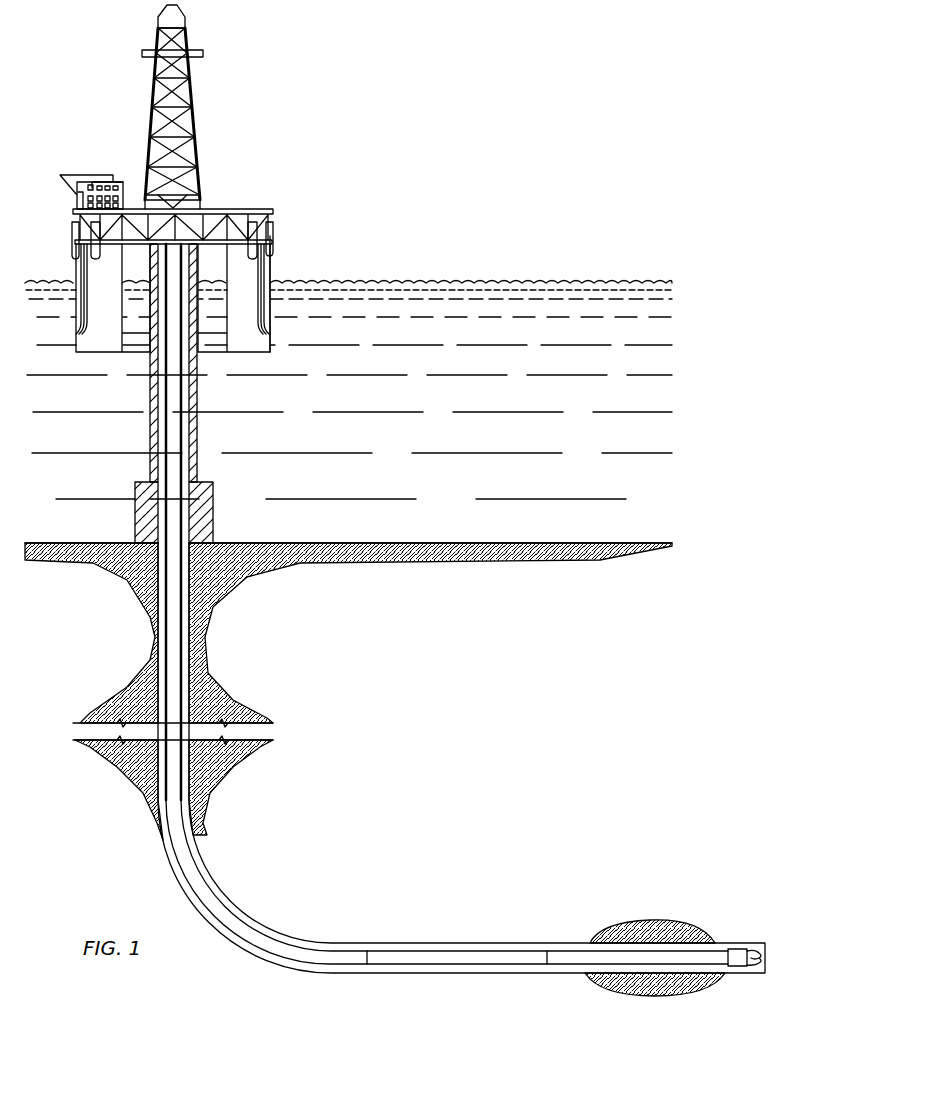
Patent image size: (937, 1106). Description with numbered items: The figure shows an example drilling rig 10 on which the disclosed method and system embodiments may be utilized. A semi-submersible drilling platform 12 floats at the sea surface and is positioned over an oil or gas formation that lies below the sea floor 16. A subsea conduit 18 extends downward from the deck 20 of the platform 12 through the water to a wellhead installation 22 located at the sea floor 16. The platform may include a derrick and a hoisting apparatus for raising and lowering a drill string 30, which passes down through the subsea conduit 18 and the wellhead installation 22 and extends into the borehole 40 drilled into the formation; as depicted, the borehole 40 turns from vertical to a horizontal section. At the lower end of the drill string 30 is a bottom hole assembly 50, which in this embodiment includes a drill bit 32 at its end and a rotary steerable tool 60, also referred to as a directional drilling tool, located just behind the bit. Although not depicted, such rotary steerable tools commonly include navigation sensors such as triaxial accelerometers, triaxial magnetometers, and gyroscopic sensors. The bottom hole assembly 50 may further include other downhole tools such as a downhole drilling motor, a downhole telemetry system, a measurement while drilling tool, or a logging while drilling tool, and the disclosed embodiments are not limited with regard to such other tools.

The drilling rig 10 is at (268, 106).
The semi-submersible drilling platform 12 is at (256, 209).
The deck 20 is at (276, 240).
The drill string 30 is at (172, 362).
The subsea conduit 18 is at (198, 430).
The wellhead installation 22 is at (205, 481).
The sea floor 16 is at (399, 543).
The borehole 40 is at (157, 639).
The rotary steerable tool 60 is at (577, 955).
The drill bit 32 is at (740, 950).
The bottom hole assembly 50 is at (763, 997).